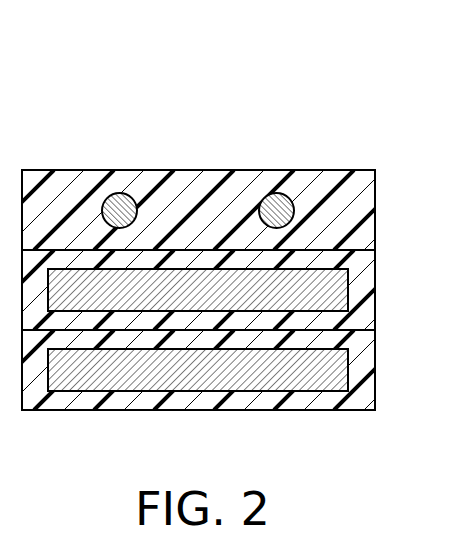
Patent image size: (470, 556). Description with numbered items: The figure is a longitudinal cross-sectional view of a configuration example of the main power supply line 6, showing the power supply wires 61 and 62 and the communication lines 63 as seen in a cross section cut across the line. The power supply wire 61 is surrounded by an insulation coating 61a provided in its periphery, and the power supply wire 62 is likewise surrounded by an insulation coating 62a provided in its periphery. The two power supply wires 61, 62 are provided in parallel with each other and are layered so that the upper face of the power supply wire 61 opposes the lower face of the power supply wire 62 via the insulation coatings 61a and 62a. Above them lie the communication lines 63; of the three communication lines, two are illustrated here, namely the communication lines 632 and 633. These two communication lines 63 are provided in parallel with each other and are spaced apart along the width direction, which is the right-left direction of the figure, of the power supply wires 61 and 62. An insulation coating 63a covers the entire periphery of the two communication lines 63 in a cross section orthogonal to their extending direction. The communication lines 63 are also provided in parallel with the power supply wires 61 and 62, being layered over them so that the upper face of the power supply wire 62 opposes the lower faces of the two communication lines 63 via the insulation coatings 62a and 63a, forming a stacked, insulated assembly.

The main power supply line 6 is at (38, 52).
The power supply wire 61 is at (338, 358).
The insulation coating 61a is at (368, 390).
The power supply wire 62 is at (342, 280).
The insulation coating 62a is at (368, 310).
The communication lines 63 is at (214, 144).
The insulation coating 63a is at (368, 218).
The communication line 632 is at (297, 169).
The communication line 633 is at (119, 193).